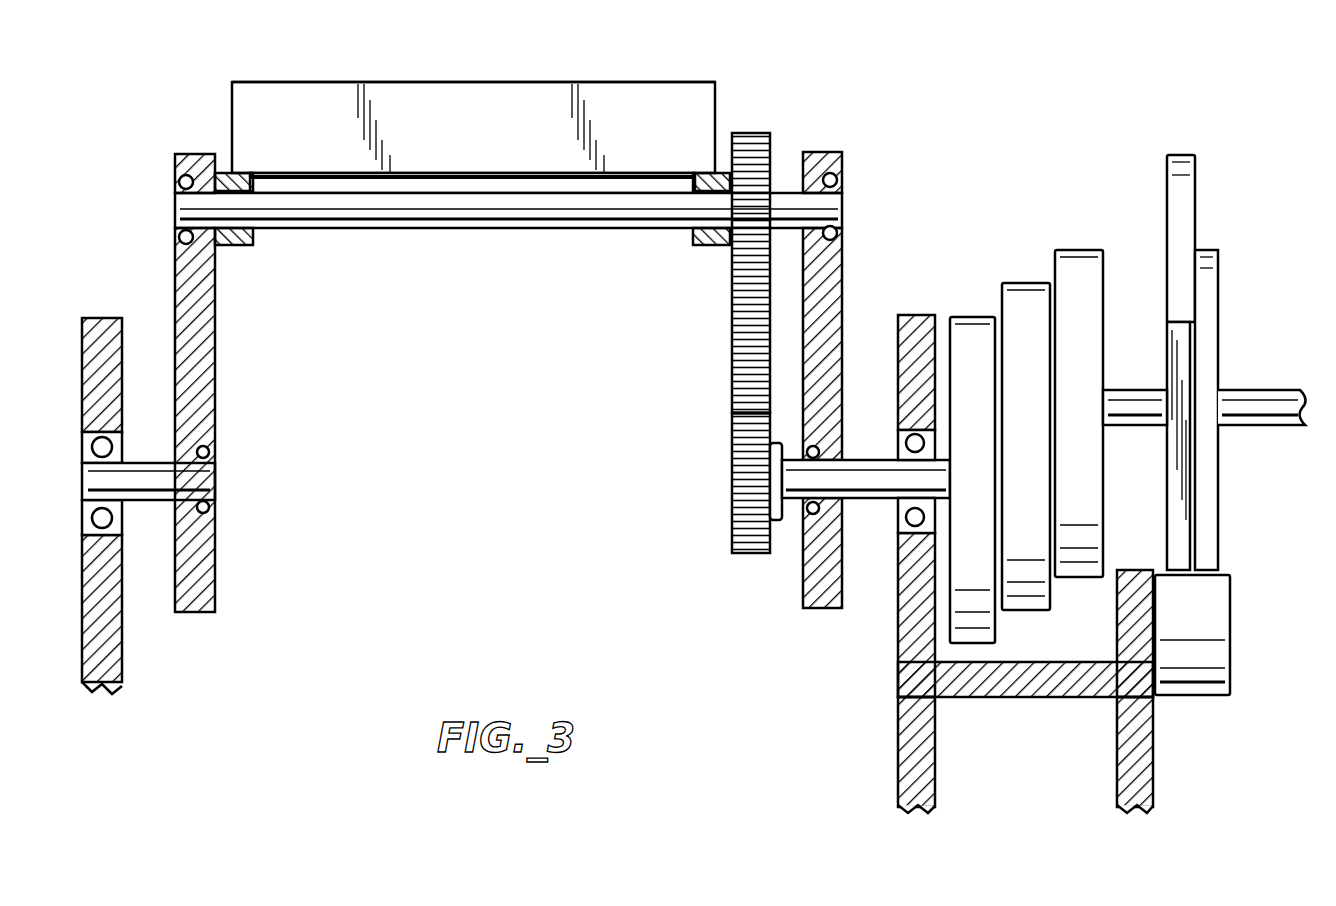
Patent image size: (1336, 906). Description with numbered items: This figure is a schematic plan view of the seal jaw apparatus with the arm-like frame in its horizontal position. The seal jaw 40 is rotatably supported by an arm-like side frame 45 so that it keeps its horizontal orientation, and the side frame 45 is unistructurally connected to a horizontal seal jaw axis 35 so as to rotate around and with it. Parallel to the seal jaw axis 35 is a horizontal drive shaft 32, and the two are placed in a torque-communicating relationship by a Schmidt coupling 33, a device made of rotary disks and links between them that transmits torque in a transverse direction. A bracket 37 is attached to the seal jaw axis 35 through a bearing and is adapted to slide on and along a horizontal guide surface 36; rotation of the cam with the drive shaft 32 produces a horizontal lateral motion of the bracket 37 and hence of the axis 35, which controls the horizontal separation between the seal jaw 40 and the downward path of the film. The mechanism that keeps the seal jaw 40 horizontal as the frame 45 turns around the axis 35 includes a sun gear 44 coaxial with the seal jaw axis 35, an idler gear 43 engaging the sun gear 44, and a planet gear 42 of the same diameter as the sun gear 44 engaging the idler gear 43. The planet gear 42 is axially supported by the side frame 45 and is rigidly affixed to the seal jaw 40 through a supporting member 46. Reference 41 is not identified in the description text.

The horizontal drive shaft 32 is at (1243, 390).
The Schmidt coupling 33 is at (1010, 240).
The horizontal seal jaw axis 35 is at (878, 482).
The horizontal guide surface 36 is at (937, 740).
The bracket 37 is at (897, 625).
The seal jaw 40 is at (322, 110).
The roller surface 41 is at (620, 80).
The planet gear 42 is at (753, 130).
The idler gear 43 is at (735, 380).
The sun gear 44 is at (728, 525).
The arm-like side frame 45 is at (175, 300).
The supporting member 46 is at (243, 247).